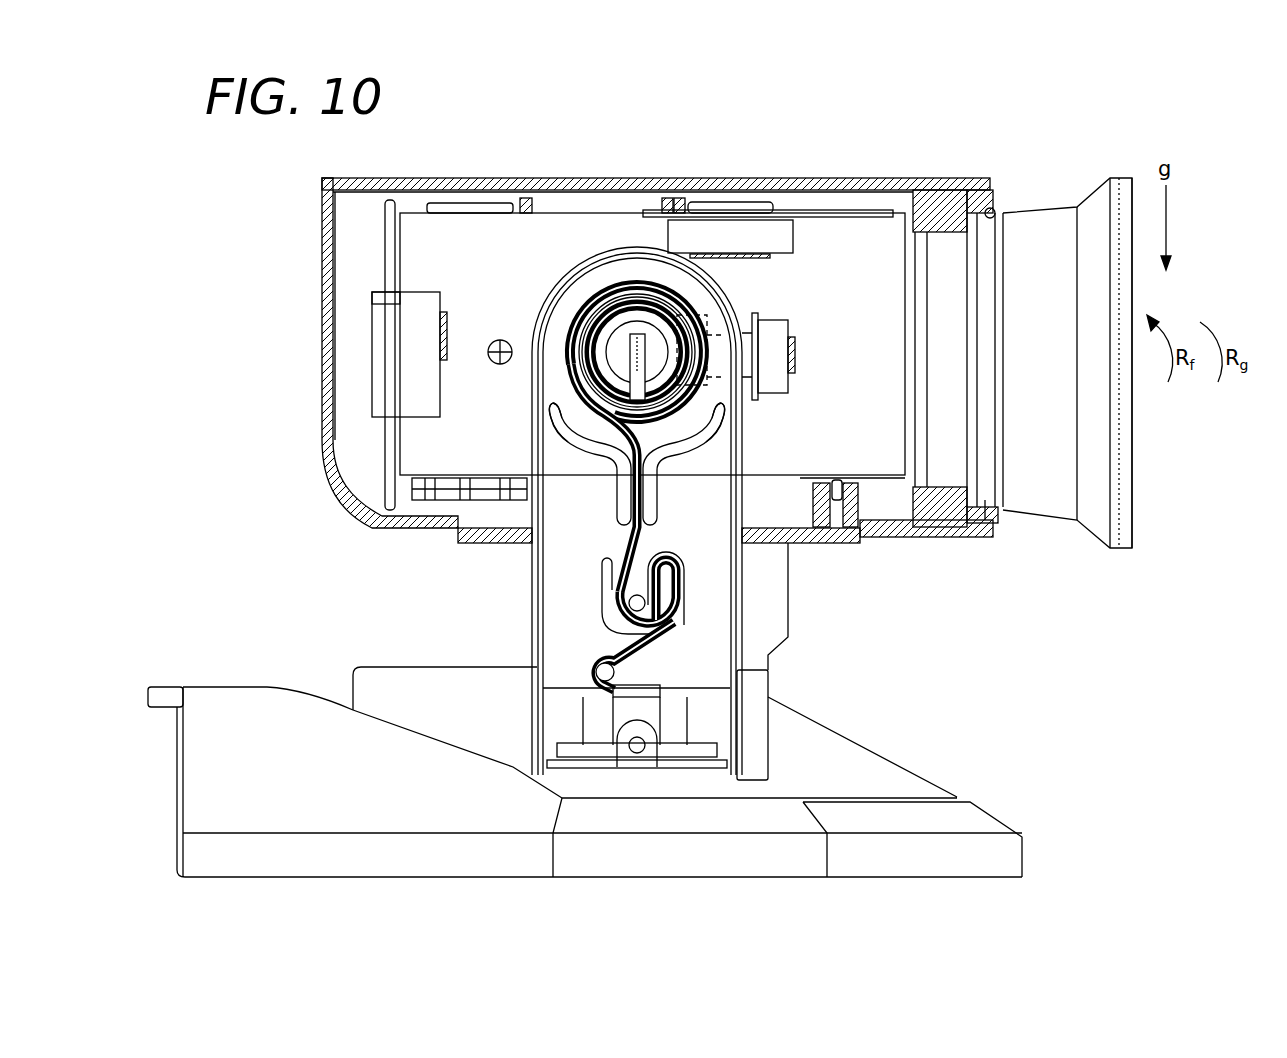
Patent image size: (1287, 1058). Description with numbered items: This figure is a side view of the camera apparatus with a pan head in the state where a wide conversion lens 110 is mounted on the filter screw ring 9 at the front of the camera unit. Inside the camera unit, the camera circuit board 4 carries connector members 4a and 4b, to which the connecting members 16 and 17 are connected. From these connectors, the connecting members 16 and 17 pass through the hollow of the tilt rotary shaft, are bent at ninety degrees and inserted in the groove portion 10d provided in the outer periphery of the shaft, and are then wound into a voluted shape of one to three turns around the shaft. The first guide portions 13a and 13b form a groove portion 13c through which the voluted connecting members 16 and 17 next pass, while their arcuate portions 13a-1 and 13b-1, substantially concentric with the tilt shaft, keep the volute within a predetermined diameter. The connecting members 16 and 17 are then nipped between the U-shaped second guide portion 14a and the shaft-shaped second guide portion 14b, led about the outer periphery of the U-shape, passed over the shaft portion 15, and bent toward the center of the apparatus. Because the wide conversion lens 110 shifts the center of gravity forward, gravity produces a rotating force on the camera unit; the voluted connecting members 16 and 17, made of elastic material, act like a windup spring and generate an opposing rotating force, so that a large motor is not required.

The camera circuit board 4 is at (835, 235).
The connector member 4a is at (722, 318).
The connector member 4b is at (762, 318).
The filter screw ring 9 is at (985, 500).
The groove portion 10d is at (700, 392).
The first guide portion 13a is at (672, 448).
The arcuate portion 13a-1 is at (710, 420).
The first guide portion 13b is at (590, 450).
The arcuate portion 13b-1 is at (560, 420).
The groove portion 13c is at (628, 512).
The second guide portion 14a is at (600, 592).
The second guide portion 14b is at (660, 548).
The shaft portion 15 is at (615, 672).
The connecting member 16 is at (567, 333).
The connecting member 17 is at (577, 317).
The wide conversion lens 110 is at (1043, 232).